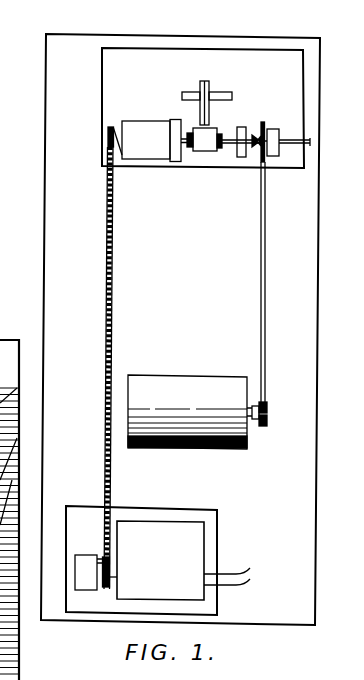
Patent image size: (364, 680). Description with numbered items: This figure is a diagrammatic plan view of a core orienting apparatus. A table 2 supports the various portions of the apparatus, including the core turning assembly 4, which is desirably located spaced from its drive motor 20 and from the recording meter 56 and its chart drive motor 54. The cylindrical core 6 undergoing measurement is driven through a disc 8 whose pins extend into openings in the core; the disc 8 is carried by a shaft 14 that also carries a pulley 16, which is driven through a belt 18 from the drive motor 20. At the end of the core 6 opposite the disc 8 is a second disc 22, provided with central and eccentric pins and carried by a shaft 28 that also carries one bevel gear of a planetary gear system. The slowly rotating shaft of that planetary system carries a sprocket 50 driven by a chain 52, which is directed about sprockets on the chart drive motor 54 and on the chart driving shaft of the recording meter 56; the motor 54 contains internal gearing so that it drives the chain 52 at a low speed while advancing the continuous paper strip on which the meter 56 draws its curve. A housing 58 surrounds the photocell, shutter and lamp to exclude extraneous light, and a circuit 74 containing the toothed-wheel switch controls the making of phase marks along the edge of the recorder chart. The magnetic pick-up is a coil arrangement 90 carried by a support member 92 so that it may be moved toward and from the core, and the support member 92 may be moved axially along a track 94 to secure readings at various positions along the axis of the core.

The table 2 is at (46, 237).
The core turning assembly 4 is at (279, 58).
The cylindrical core 6 is at (206, 150).
The disc 8 is at (220, 134).
The shaft 14 is at (230, 146).
The pulley 16 is at (264, 125).
The belt 18 is at (260, 300).
The drive motor 20 is at (230, 450).
The second disc 22 is at (190, 131).
The shaft 28 is at (189, 148).
The sprocket 50 is at (107, 133).
The chain 52 is at (108, 302).
The chart drive motor 54 is at (87, 562).
The recording meter 56 is at (195, 533).
The housing 58 is at (142, 124).
The circuit 74 is at (229, 573).
The coil arrangement 90 is at (201, 80).
The support member 92 is at (230, 91).
The track 94 is at (188, 92).